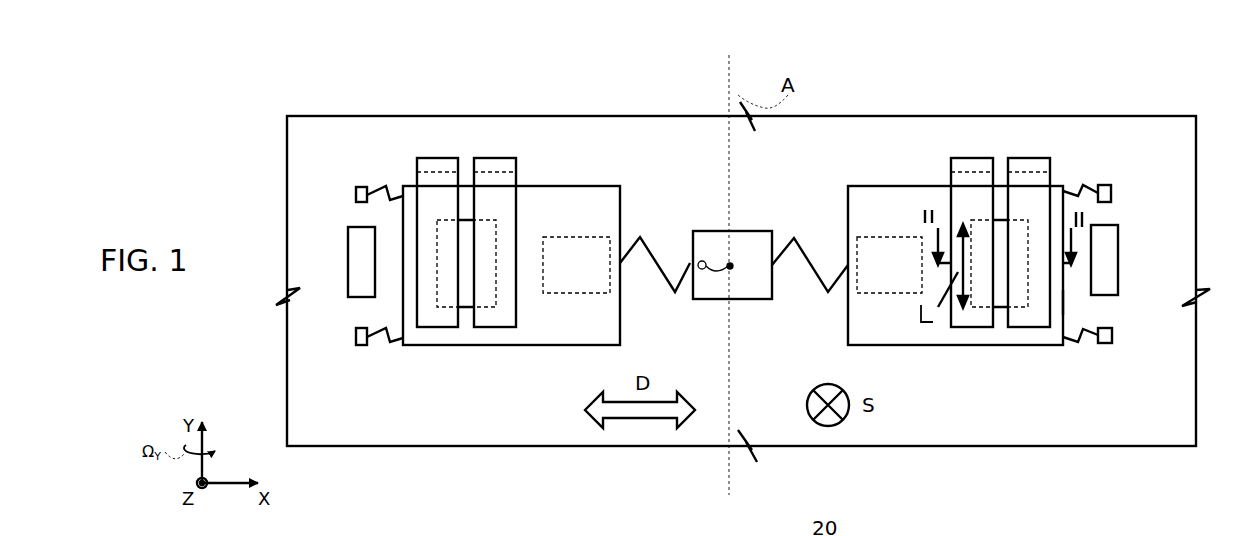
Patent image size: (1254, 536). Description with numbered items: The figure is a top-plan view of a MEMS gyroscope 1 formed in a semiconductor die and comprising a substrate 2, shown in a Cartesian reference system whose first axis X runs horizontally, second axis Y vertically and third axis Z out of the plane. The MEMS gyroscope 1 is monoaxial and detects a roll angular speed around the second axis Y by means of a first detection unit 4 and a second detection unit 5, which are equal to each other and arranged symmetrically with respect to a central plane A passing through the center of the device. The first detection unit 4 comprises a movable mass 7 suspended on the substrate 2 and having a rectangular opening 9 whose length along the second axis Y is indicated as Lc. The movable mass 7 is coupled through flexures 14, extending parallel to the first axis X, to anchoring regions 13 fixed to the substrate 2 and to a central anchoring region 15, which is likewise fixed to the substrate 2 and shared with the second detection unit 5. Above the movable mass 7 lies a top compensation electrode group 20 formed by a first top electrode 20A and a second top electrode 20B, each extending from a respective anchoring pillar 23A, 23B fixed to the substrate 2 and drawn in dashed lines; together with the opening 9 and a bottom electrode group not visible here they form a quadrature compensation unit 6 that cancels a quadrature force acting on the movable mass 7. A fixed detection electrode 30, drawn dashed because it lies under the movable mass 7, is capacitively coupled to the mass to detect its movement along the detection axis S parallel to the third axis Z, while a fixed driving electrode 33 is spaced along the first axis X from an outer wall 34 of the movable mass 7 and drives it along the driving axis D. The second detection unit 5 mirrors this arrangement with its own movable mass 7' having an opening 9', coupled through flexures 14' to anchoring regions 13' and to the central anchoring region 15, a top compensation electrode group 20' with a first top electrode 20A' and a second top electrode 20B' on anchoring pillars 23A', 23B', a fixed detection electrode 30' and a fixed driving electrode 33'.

The MEMS gyroscope 1 is at (275, 100).
The substrate 2 is at (1170, 445).
The first detection unit 4 is at (1168, 127).
The second detection unit 5 is at (382, 145).
The quadrature compensation unit 6 is at (1005, 148).
The movable mass 7 is at (964, 300).
The movable mass 7' is at (511, 302).
The opening 9 is at (1003, 317).
The opening 9' is at (468, 310).
The anchoring regions 13 is at (1138, 275).
The anchoring regions 13' is at (333, 285).
The flexures 14 is at (962, 279).
The flexures 14' is at (528, 293).
The central anchoring region 15 is at (728, 240).
The top compensation electrode group 20 is at (1006, 268).
The top compensation electrode group 20' is at (460, 270).
The first top electrode 20A is at (949, 224).
The first top electrode 20A' is at (531, 226).
The second top electrode 20B is at (1062, 225).
The second top electrode 20B' is at (405, 224).
The anchoring pillar 23A is at (976, 147).
The anchoring pillar 23A' is at (506, 148).
The anchoring pillar 23B is at (1038, 147).
The anchoring pillar 23B' is at (447, 147).
The fixed detection electrode 30 is at (855, 233).
The fixed detection electrode 30' is at (599, 232).
The fixed driving electrode 33 is at (1137, 256).
The fixed driving electrode 33' is at (339, 259).
The outer wall 34 is at (1070, 302).